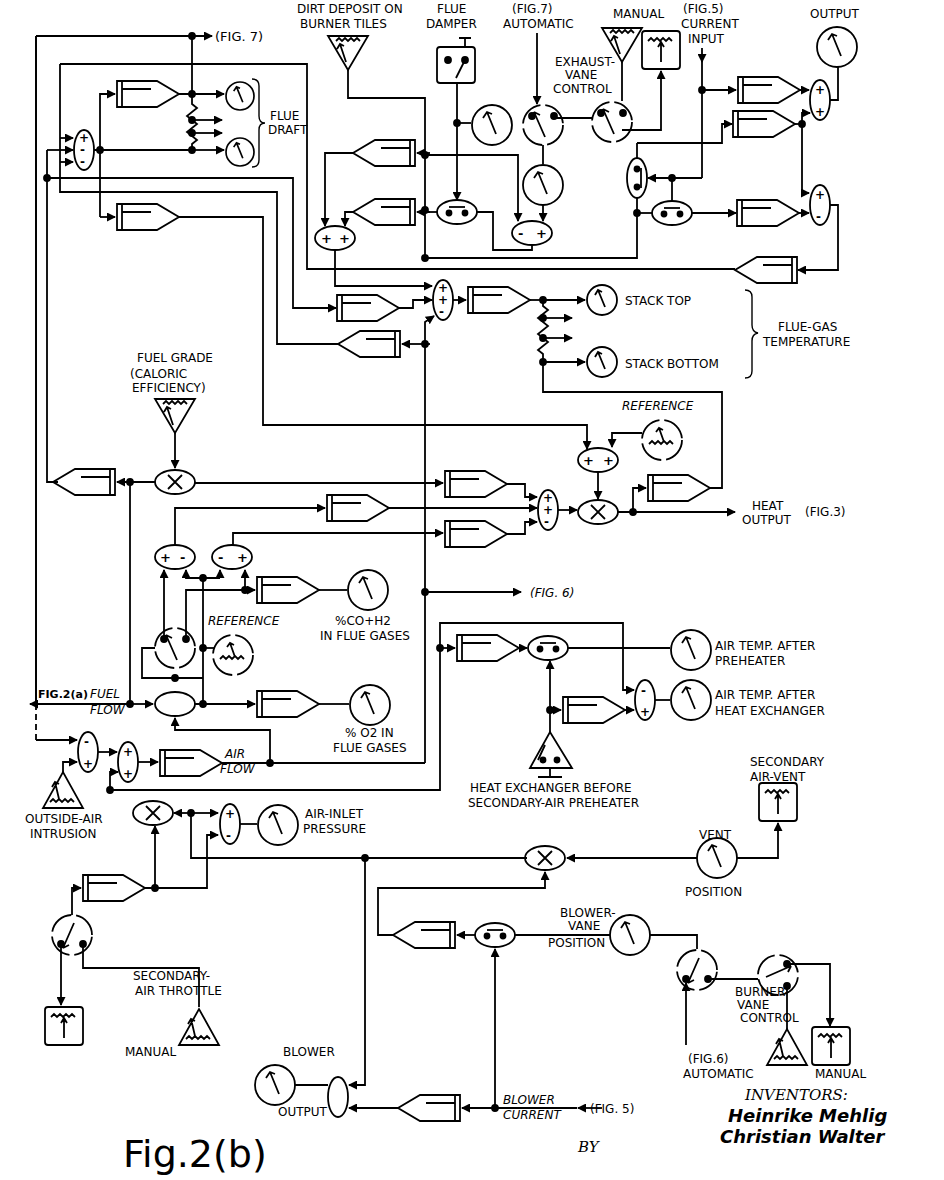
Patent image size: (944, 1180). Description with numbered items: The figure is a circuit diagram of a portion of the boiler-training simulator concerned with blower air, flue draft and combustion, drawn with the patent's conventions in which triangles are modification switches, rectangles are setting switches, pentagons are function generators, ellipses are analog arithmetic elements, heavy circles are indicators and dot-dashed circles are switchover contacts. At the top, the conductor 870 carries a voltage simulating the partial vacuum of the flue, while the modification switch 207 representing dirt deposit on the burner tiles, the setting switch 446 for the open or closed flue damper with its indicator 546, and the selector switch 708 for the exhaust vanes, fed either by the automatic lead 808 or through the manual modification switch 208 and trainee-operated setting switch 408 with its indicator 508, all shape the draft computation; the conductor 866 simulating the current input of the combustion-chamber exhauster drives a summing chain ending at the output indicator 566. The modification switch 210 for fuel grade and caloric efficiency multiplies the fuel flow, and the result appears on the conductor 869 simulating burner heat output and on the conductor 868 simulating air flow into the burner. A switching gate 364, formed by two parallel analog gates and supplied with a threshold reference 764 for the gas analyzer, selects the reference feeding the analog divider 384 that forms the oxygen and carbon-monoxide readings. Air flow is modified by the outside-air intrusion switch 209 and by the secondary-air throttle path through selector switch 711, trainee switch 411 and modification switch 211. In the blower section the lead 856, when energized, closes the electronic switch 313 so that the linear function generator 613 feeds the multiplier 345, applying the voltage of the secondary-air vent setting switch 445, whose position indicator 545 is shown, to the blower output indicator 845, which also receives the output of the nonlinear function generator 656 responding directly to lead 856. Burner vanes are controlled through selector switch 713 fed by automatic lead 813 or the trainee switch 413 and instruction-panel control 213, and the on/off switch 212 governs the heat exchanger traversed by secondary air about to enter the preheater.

The conductor for voltage simulating partial vacuum of flue 870 is at (190, 35).
The modification switch for extent of dirt deposit on burner tiles 207 is at (362, 55).
The setting switch for open/closed position of flue damper 446 is at (475, 57).
The flue damper indicator 546 is at (488, 102).
The selector switch for exhaust vanes 708 is at (556, 142).
The lead for automatic exhaust vane control 808 is at (540, 48).
The exhaust vane indicator 508 is at (564, 185).
The modification switch for manual control of exhaust vanes for blower air 208 is at (628, 55).
The trainee-operated setting switch for exhaust vanes 408 is at (670, 70).
The conductor for voltage simulating current input of combustion-chamber exhauster 866 is at (704, 80).
The exhauster output indicator 566 is at (817, 47).
The modification switch for changes in fuel grade and caloric efficiency 210 is at (185, 418).
The conductor for voltage simulating heat output of burner 869 is at (706, 514).
The conductor for voltage simulating air flow into burner 868 is at (480, 590).
The switching gate 364 is at (160, 640).
The threshold setting for gas analyzer 764 is at (253, 652).
The analog divider 384 is at (190, 714).
The modification switch for outside-air intrusion into blower 209 is at (50, 790).
The selector switch for secondary-air throttle 711 is at (93, 930).
The trainee-operated setting switch for secondary-air throttle 411 is at (84, 1022).
The modification switch for manual control of throttle for secondary blower air 211 is at (214, 1028).
The blower output indicator 845 is at (336, 1077).
The nonlinear function generator 656 is at (437, 1094).
The blower current lead 856 is at (566, 1104).
The linear function generator 613 is at (425, 949).
The continuous-voltage electronic switch 313 is at (505, 948).
The multiplier 345 is at (556, 850).
The setting switch for position of secondary-air vent 445 is at (797, 818).
The vent position indicator 545 is at (735, 868).
The selector switch for burner vanes 713 is at (714, 956).
The lead for automatic burner vane control 813 is at (684, 1008).
The trainee-operated switch for burner vanes 413 is at (818, 1030).
The instruction-panel control for burner vanes 213 is at (770, 1046).
The on/off switch for heat exchanger 212 is at (566, 742).